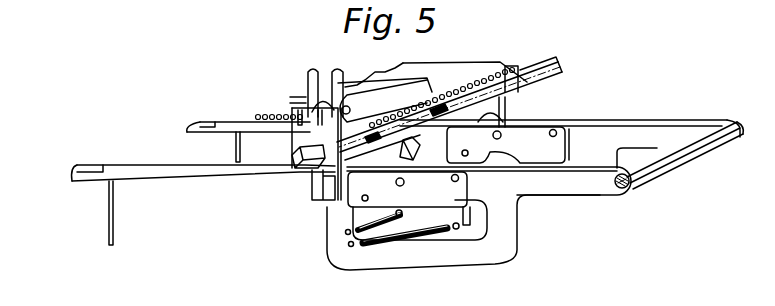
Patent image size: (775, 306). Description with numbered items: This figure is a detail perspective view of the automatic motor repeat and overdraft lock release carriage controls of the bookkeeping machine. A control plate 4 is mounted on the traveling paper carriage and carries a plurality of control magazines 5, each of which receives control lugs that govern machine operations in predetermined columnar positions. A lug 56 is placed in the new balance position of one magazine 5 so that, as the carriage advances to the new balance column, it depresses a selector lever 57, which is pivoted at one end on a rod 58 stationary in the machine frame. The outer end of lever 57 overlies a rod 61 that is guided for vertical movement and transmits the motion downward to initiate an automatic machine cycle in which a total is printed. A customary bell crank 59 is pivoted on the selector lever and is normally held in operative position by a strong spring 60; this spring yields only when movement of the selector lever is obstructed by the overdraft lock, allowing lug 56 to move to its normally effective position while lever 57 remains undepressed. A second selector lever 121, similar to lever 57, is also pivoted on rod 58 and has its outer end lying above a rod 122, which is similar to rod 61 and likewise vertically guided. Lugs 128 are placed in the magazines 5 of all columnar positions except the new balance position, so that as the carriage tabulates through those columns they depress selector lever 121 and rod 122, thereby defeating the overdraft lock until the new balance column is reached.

The control plate 4 is at (440, 67).
The control magazine 5 is at (542, 72).
The lug 56 is at (418, 150).
The selector lever 57 is at (236, 177).
The rod 58 is at (682, 160).
The bell crank 59 is at (440, 190).
The spring 60 is at (408, 237).
The rod 61 is at (117, 213).
The selector lever 121 is at (614, 131).
The rod 122 is at (238, 143).
The lug 128 is at (507, 100).